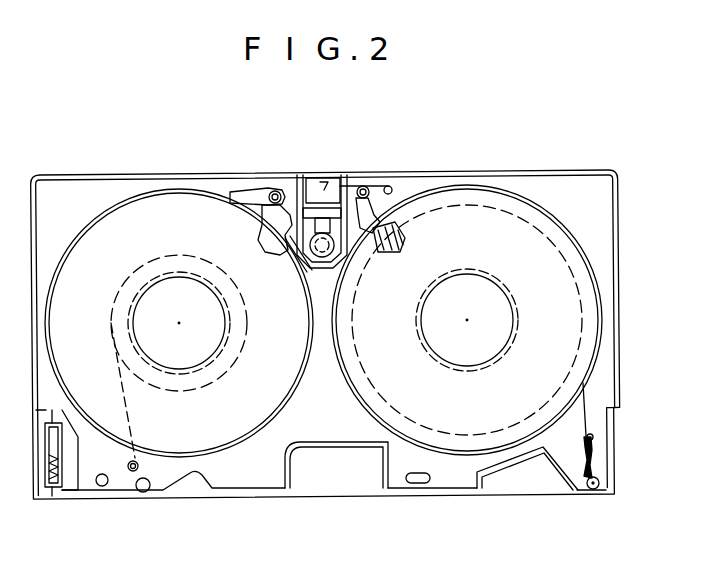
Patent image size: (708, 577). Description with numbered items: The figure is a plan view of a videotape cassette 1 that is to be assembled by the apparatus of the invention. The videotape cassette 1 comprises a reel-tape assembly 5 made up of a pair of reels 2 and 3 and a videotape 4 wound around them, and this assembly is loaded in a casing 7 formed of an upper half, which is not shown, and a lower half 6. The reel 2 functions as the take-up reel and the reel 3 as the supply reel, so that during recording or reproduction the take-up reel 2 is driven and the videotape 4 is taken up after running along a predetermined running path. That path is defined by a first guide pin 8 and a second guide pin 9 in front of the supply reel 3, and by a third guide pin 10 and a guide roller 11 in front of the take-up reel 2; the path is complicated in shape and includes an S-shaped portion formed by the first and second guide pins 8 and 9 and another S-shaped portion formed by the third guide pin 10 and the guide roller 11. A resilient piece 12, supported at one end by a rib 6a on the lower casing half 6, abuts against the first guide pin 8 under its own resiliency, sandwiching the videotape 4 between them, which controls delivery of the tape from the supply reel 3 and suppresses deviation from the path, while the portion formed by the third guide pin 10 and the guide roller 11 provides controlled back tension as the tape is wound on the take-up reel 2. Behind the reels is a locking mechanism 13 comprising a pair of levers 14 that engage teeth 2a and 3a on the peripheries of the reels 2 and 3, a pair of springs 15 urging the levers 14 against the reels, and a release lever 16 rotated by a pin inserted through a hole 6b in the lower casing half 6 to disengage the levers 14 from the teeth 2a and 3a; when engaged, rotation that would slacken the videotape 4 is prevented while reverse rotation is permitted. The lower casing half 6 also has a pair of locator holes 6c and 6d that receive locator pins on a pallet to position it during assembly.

The videotape cassette 1 is at (566, 147).
The take-up reel 2 is at (158, 203).
The teeth 2a is at (233, 190).
The supply reel 3 is at (486, 203).
The teeth 3a is at (395, 198).
The videotape 4 is at (345, 496).
The reel-tape assembly 5 is at (71, 215).
The lower half 6 is at (595, 203).
The rib 6a is at (560, 490).
The hole 6b is at (298, 268).
The locator hole 6c is at (95, 486).
The locator hole 6d is at (416, 489).
The casing 7 is at (624, 256).
The first guide pin 8 is at (590, 442).
The second guide pin 9 is at (600, 484).
The third guide pin 10 is at (137, 494).
The guide roller 11 is at (128, 476).
The resilient piece 12 is at (548, 460).
The locking mechanism 13 is at (327, 178).
The levers 14 is at (285, 190).
The springs 15 is at (270, 190).
The release lever 16 is at (340, 268).